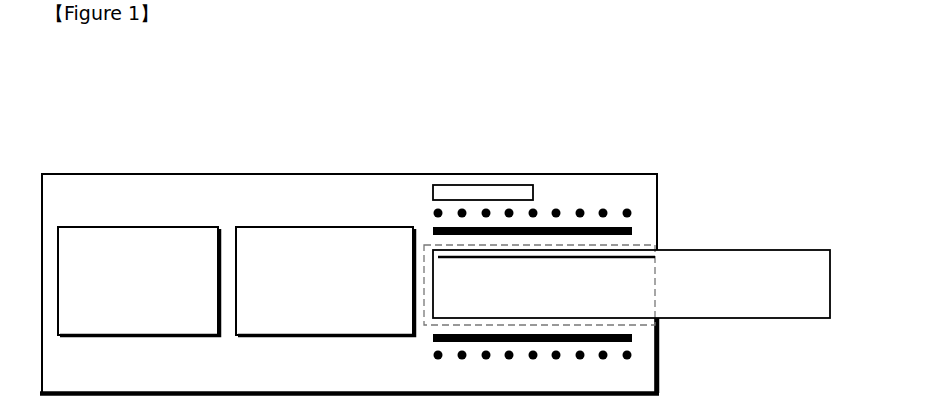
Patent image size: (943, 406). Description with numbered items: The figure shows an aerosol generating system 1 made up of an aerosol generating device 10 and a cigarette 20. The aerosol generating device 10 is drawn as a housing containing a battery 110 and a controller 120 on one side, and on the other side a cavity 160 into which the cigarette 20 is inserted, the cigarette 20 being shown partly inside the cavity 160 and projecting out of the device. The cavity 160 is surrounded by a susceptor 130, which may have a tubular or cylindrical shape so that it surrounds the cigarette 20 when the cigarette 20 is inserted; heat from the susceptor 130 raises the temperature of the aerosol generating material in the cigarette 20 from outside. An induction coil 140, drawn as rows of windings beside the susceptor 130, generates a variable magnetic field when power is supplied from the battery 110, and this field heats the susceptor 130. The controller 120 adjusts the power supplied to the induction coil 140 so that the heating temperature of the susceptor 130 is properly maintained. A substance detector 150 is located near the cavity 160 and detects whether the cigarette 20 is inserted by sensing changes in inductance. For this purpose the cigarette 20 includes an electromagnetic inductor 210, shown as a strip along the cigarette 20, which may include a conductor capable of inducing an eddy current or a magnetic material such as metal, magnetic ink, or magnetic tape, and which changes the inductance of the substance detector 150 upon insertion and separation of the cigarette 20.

The aerosol generating system 1 is at (712, 82).
The aerosol generating device 10 is at (235, 173).
The cigarette 20 is at (793, 250).
The battery 110 is at (139, 227).
The controller 120 is at (329, 227).
The susceptor 130 is at (618, 226).
The induction coil 140 is at (556, 208).
The substance detector 150 is at (483, 185).
The cavity 160 is at (635, 322).
The electromagnetic inductor 210 is at (655, 257).